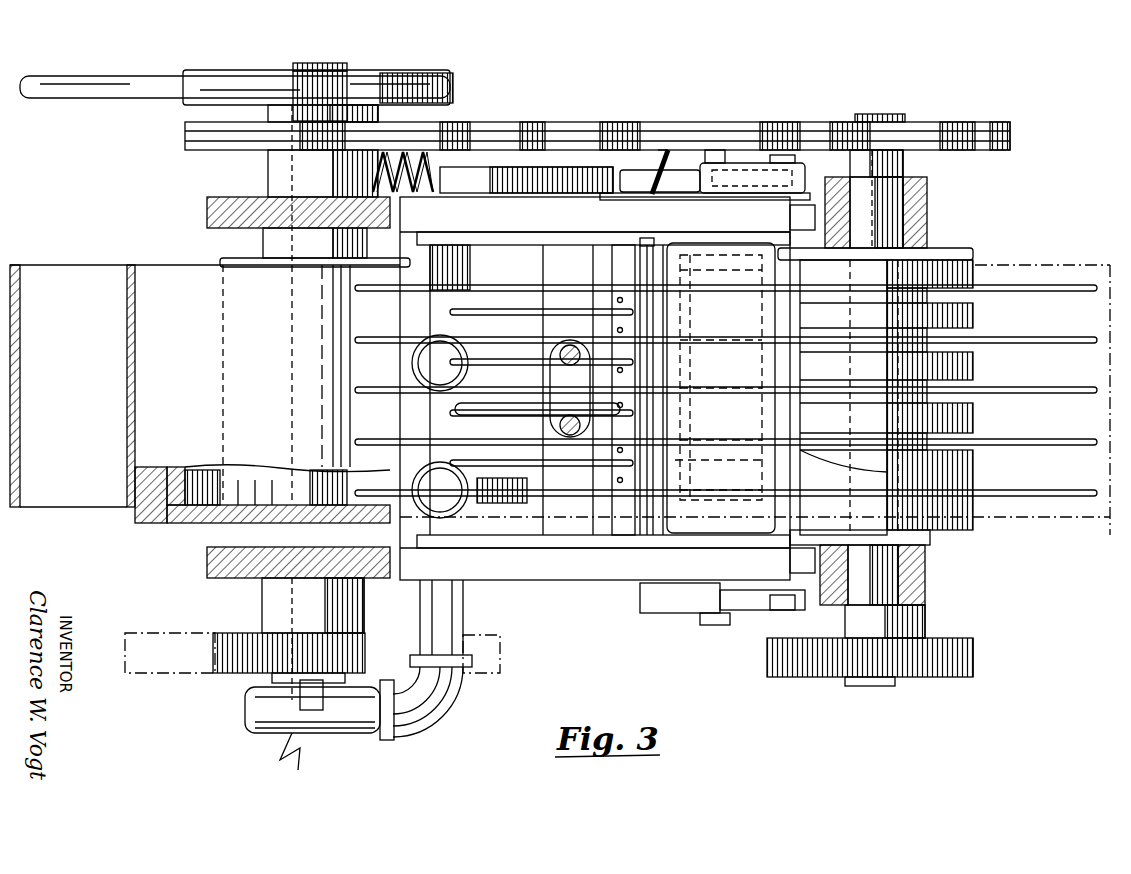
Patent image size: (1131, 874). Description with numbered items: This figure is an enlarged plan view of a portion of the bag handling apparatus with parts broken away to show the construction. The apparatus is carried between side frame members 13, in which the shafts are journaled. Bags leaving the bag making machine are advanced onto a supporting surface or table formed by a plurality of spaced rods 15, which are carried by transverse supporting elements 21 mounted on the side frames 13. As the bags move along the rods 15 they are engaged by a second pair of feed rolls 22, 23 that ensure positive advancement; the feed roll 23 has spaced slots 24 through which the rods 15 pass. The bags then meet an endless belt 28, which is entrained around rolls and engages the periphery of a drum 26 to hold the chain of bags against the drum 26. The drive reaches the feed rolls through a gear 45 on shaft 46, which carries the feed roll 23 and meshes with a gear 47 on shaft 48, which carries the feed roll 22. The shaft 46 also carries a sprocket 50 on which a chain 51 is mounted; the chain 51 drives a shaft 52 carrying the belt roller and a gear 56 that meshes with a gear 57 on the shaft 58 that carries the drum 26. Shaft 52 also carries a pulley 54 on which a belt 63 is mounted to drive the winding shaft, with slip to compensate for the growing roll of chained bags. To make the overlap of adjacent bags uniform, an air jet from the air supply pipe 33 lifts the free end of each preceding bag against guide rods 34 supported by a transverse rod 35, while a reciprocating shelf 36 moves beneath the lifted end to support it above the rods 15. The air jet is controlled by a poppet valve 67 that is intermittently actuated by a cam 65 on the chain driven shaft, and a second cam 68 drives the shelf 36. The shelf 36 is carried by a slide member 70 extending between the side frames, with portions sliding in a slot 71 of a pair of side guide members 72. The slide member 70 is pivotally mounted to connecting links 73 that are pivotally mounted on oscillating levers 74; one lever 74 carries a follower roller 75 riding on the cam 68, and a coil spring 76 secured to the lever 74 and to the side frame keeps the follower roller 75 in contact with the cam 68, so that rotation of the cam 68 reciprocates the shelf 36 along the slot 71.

The side frame members 13 is at (206, 202).
The spaced rods 15 is at (355, 288).
The transverse supporting elements 21 is at (471, 266).
The feed roll 22 is at (955, 530).
The feed roll 23 is at (975, 417).
The slots 24 is at (975, 303).
The drum 26 is at (178, 466).
The endless belt 28 is at (14, 265).
The air supply pipe 33 is at (636, 326).
The guide rods 34 is at (450, 312).
The transverse rod 35 is at (640, 252).
The reciprocating shelf 36 is at (696, 462).
The gear 45 is at (800, 676).
The shaft 46 is at (878, 113).
The gear 47 is at (958, 677).
The shaft 48 is at (855, 176).
The sprocket 50 is at (905, 165).
The chain 51 is at (788, 121).
The shaft 52 is at (336, 66).
The pulley 54 is at (248, 72).
The gear 56 is at (222, 670).
The gear 57 is at (152, 632).
The shaft 58 is at (290, 372).
The belt 63 is at (116, 76).
The cam 65 is at (528, 490).
The poppet valve 67 is at (466, 506).
The cam 68 is at (552, 166).
The slide member 70 is at (762, 414).
The slot 71 is at (803, 389).
The side guide members 72 is at (535, 233).
The connecting links 73 is at (742, 158).
The levers 74 is at (700, 163).
The follower roller 75 is at (632, 170).
The coil spring 76 is at (436, 194).